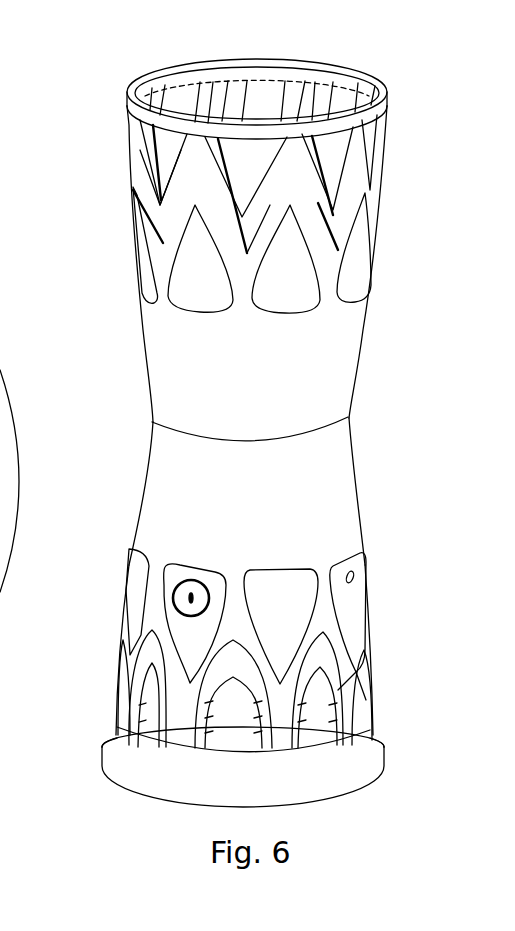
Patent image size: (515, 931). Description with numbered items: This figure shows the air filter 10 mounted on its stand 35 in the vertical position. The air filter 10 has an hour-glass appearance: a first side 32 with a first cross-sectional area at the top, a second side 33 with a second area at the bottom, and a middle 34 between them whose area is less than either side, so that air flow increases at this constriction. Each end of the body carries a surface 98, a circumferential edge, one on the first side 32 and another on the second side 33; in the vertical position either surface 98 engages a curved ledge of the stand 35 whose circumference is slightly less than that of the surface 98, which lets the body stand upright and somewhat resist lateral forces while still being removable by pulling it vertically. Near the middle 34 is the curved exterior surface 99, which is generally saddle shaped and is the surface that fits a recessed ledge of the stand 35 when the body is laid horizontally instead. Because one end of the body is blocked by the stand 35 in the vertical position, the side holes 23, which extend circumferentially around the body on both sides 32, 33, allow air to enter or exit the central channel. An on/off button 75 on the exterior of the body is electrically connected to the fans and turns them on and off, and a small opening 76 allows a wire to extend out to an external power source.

The air filter 10 is at (405, 123).
The surface 98 is at (128, 100).
The holes 23 is at (142, 177).
The first side 32 is at (397, 227).
The middle 34 is at (369, 409).
The curved exterior surface 99 is at (148, 437).
The opening 76 is at (356, 575).
The on/off button 75 is at (188, 597).
The second side 33 is at (390, 621).
The stand 35 is at (360, 757).